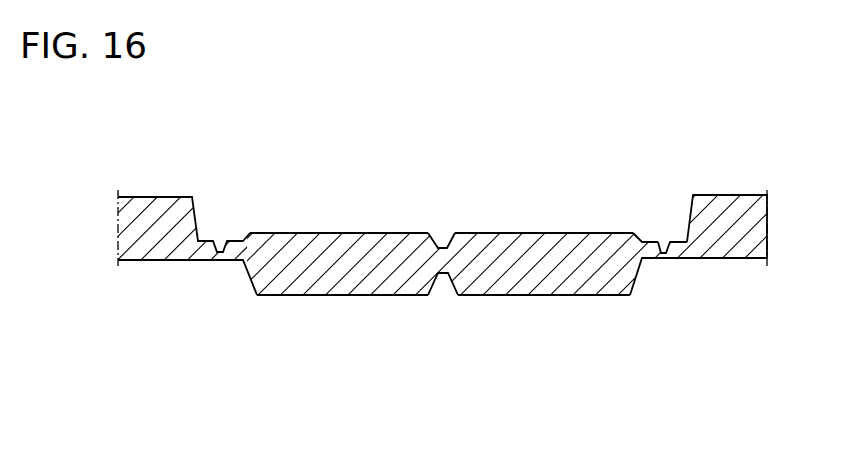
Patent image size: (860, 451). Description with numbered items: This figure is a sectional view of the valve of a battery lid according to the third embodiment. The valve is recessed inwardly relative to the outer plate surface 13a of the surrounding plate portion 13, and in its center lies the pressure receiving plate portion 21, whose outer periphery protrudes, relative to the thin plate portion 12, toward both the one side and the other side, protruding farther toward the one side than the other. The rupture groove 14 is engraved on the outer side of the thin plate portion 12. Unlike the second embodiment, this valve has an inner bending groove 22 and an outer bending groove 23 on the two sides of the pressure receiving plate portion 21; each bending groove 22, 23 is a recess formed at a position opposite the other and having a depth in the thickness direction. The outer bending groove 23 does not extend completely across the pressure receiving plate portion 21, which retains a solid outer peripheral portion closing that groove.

The thin plate portion 12 is at (652, 245).
The surrounding plate portion 13 is at (747, 230).
The outer plate surface 13a is at (730, 195).
The rupture groove 14 is at (662, 243).
The pressure receiving plate portion 21 is at (345, 262).
The inner bending groove 22 is at (440, 280).
The outer bending groove 23 is at (447, 247).